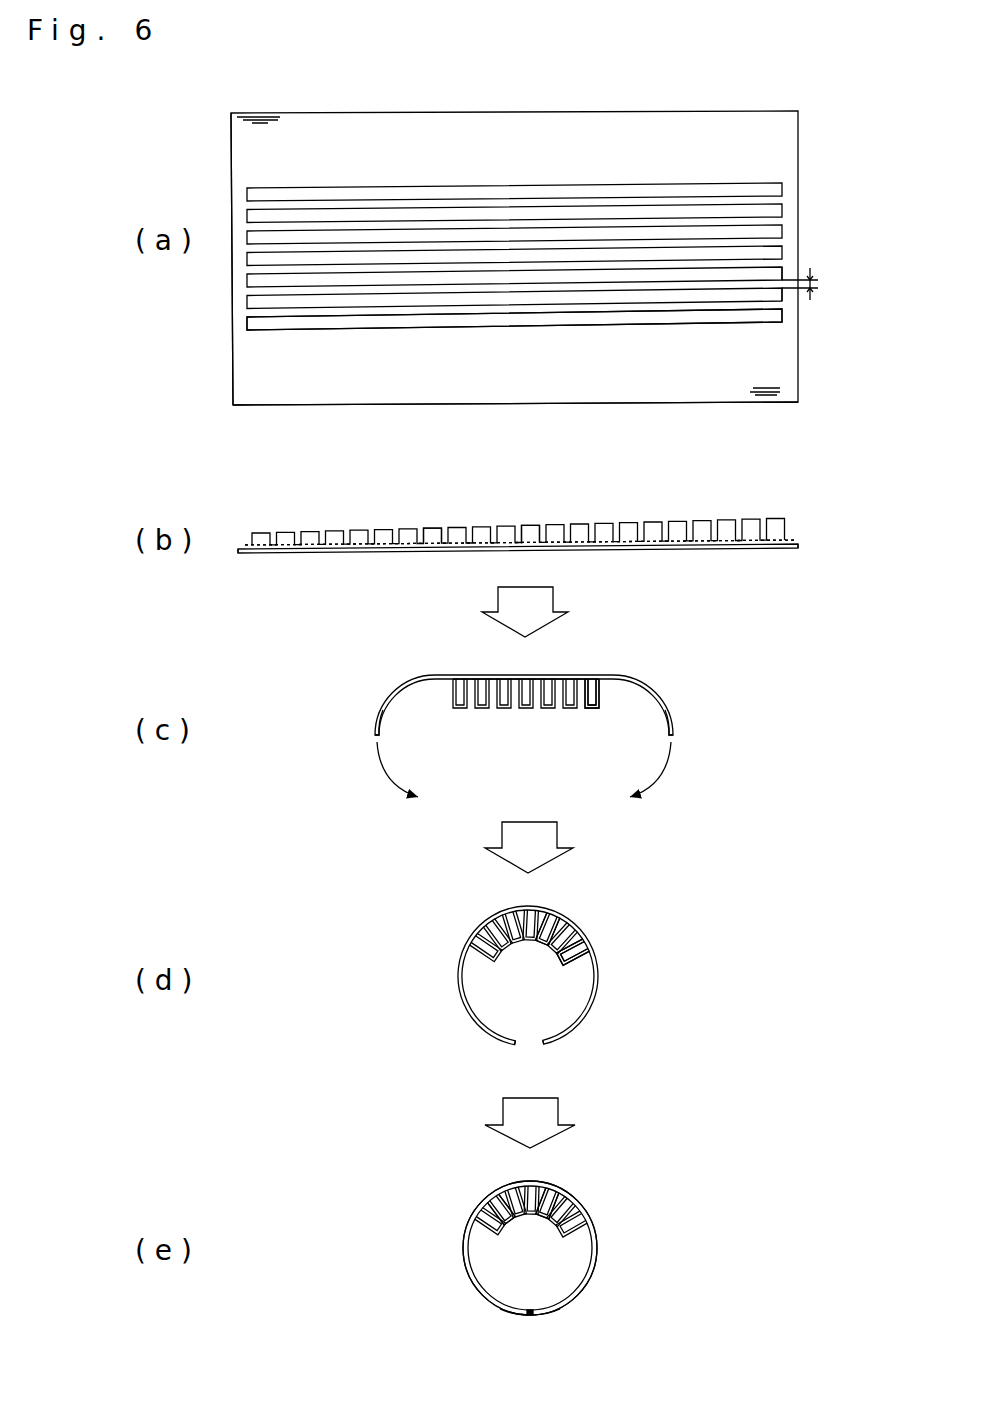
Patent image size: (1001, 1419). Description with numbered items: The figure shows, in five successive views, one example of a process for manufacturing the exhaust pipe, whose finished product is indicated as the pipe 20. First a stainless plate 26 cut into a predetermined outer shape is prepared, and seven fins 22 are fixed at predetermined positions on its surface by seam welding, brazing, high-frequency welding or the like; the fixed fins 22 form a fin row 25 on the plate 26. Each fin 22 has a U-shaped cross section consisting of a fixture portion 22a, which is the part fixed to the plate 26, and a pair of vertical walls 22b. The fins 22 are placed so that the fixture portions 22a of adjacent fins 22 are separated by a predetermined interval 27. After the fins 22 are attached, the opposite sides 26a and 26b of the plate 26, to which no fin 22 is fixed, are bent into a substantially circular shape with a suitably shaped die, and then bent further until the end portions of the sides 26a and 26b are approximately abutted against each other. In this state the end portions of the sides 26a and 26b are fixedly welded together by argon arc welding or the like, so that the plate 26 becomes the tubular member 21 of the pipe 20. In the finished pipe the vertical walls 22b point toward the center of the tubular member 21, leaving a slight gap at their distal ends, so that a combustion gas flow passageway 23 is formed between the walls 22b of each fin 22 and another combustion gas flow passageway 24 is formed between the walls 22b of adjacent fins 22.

The bearing element 20 is at (657, 1222).
The tubular member 21 is at (470, 1276).
The fin 22 is at (245, 191).
The fixture portion 22a is at (780, 272).
The vertical walls 22b is at (352, 318).
The combustion gas flow passageway 23 is at (500, 1206).
The combustion gas flow passageway 24 is at (565, 1210).
The comb teeth row 25 is at (447, 532).
The stainless plate 26 is at (615, 110).
The opposite side of the plate 26a is at (457, 121).
The opposite side of the plate 26b is at (463, 405).
The predetermined interval 27 is at (812, 286).